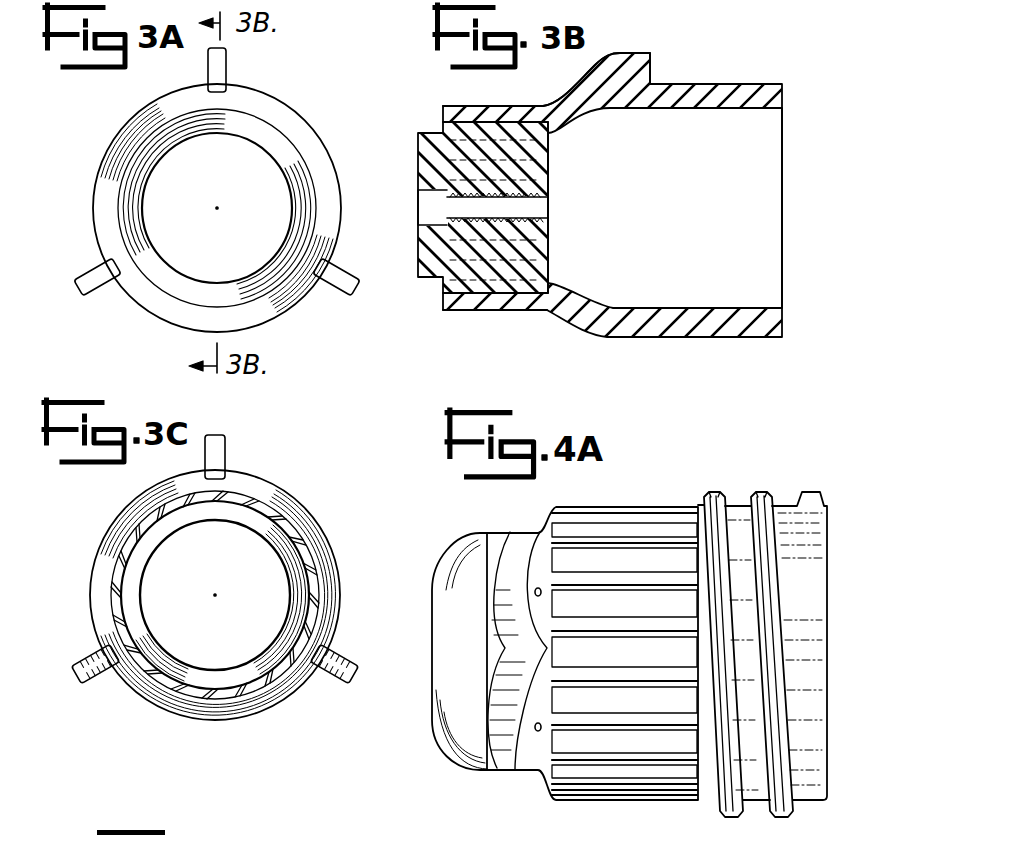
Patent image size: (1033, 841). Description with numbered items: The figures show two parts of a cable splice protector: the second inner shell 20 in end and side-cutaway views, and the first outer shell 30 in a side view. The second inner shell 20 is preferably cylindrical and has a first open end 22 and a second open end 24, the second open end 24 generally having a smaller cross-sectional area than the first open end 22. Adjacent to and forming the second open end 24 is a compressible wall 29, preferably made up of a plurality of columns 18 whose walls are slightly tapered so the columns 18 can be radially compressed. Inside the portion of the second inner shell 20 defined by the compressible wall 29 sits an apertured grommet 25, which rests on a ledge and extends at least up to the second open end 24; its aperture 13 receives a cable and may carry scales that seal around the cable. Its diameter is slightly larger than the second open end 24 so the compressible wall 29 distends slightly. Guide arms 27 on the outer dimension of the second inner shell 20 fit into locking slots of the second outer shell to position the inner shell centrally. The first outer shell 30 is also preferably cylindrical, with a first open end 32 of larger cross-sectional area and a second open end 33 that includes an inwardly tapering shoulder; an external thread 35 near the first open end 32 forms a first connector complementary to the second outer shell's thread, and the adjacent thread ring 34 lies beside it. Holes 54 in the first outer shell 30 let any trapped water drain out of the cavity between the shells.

In FIG. 3B, the aperture 13 is at (547, 208).
In FIG. 3B, the columns 18 is at (428, 168).
In FIG. 3C, the columns 18 is at (265, 515).
In FIG. 3A, the second inner shell 20 is at (342, 230).
In FIG. 3B, the second inner shell 20 is at (713, 84).
In FIG. 3C, the second inner shell 20 is at (317, 515).
In FIG. 3A, the first open end 22 is at (270, 137).
In FIG. 3B, the first open end 22 is at (760, 222).
In FIG. 3B, the second open end 24 is at (420, 196).
In FIG. 3C, the second open end 24 is at (248, 647).
In FIG. 3B, the apertured grommet 25 is at (550, 185).
In FIG. 3A, the guide arm 27 is at (342, 287).
In FIG. 3B, the guide arm 27 is at (630, 62).
In FIG. 3C, the guide arm 27 is at (352, 677).
In FIG. 3B, the compressible wall 29 is at (462, 108).
In FIG. 3C, the compressible wall 29 is at (320, 560).
In FIG. 4A, the first outer shell 30 is at (626, 510).
In FIG. 4A, the first open end 32 is at (828, 620).
In FIG. 4A, the second open end 33 is at (432, 650).
In FIG. 4A, the thread ring 34 is at (738, 500).
In FIG. 4A, the external thread 35 is at (770, 500).
In FIG. 4A, the holes 54 is at (540, 732).